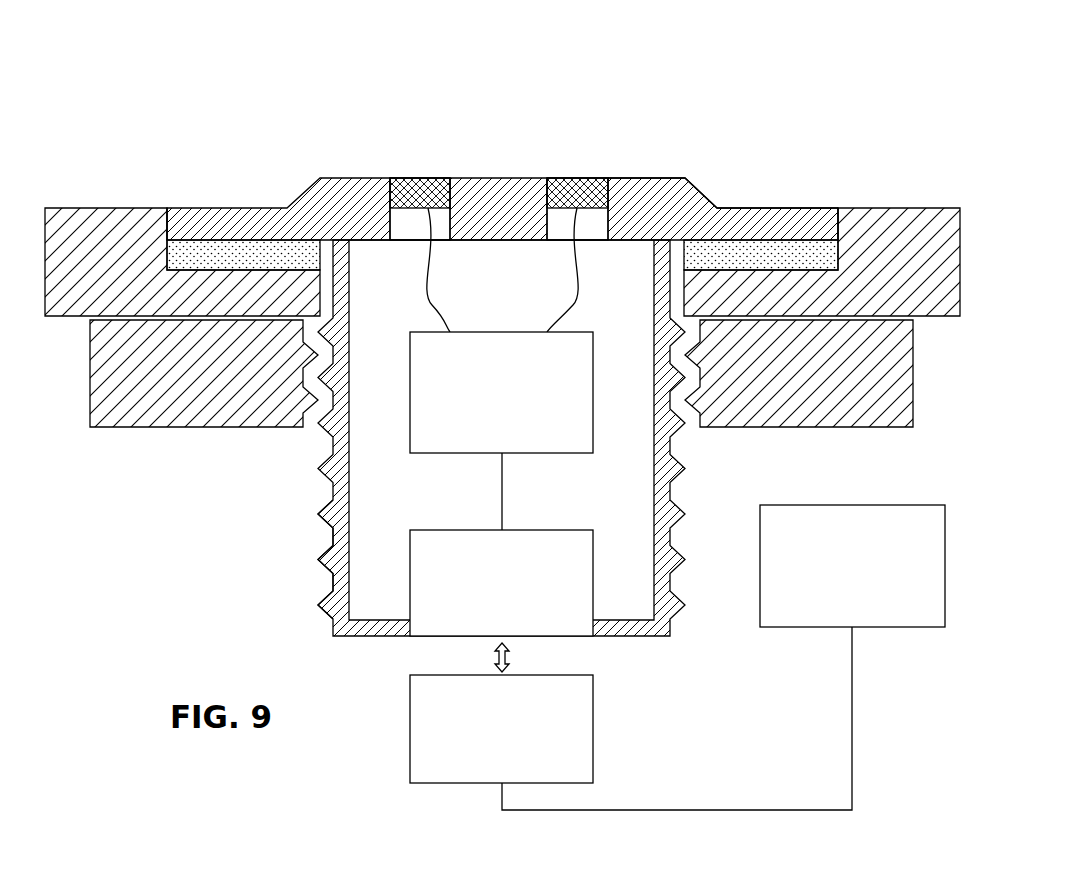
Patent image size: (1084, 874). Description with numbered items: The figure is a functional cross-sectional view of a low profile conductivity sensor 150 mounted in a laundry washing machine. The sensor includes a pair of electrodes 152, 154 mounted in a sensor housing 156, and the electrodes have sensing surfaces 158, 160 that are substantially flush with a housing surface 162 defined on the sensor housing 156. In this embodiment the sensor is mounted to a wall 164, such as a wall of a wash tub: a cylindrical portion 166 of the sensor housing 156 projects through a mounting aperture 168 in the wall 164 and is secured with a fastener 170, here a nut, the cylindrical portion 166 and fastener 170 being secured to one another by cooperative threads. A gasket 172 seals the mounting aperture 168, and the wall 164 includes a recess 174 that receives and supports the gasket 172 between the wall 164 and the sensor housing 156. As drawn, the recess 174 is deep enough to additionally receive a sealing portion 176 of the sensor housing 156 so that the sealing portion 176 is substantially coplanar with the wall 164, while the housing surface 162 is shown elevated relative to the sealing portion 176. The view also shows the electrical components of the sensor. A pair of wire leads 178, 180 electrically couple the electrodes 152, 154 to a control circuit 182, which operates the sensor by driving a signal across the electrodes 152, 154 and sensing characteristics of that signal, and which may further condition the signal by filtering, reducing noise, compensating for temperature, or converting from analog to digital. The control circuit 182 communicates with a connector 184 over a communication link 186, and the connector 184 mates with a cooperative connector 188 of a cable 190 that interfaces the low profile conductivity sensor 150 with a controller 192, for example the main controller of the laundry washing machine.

The low profile conductivity sensor 150 is at (250, 141).
The electrode 152 is at (433, 178).
The electrode 154 is at (583, 178).
The sensor housing 156 is at (252, 208).
The sensing surface 158 is at (434, 178).
The sensing surface 160 is at (588, 178).
The housing surface 162 is at (650, 178).
The wall 164 is at (122, 208).
The cylindrical portion 166 is at (318, 557).
The mounting aperture 168 is at (330, 290).
The fastener 170 is at (88, 410).
The gasket 172 is at (788, 247).
The recess 174 is at (166, 207).
The sealing portion 176 is at (745, 208).
The wire lead 178 is at (433, 305).
The wire lead 180 is at (563, 313).
The control circuit 182 is at (433, 330).
The connector 184 is at (442, 530).
The communication link 186 is at (501, 492).
The cooperative connector 188 is at (411, 753).
The cable 190 is at (727, 808).
The controller 192 is at (830, 504).